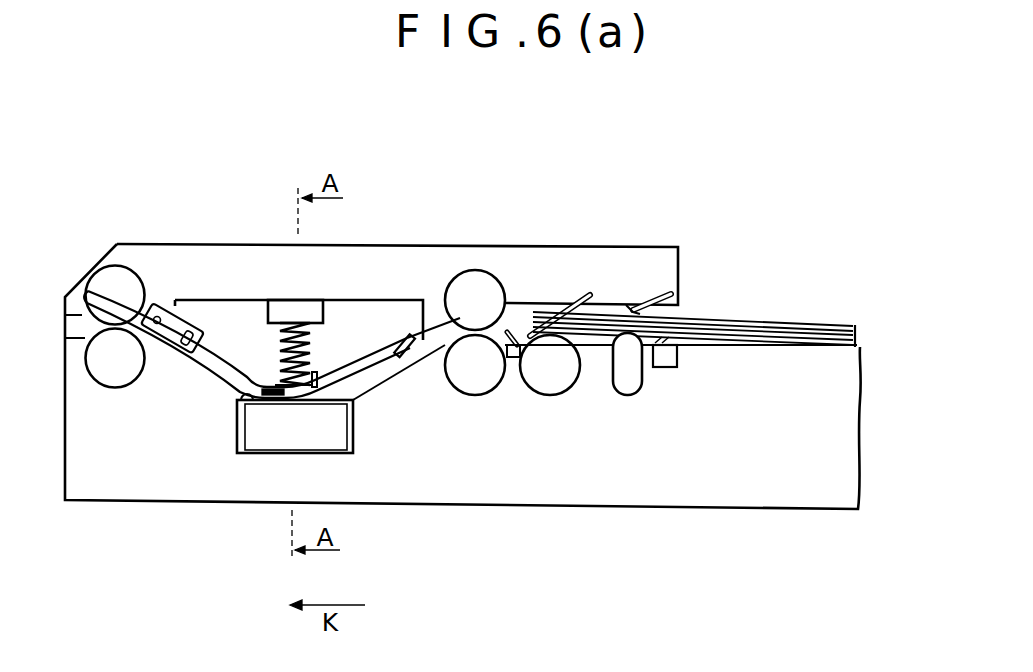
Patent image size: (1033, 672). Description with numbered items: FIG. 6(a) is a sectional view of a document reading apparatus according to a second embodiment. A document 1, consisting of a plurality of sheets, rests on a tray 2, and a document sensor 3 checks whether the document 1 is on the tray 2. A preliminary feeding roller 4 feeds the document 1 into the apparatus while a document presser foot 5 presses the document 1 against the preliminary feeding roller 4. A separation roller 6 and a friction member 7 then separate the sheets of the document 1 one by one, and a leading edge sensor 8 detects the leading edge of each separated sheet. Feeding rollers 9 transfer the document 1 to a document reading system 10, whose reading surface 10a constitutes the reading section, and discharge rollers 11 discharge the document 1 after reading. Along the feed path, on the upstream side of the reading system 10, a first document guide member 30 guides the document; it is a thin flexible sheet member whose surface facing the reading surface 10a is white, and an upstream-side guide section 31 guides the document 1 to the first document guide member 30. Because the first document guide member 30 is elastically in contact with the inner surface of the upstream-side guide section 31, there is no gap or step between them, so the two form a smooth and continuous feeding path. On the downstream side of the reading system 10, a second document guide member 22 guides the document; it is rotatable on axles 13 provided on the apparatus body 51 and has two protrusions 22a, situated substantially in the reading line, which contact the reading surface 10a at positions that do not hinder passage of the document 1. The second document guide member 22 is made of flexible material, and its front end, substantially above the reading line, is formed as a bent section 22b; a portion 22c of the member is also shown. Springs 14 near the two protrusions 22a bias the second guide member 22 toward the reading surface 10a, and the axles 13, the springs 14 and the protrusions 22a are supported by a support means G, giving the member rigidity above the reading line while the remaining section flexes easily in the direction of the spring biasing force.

The document 1 is at (793, 335).
The tray 2 is at (822, 348).
The document sensor 3 is at (667, 358).
The preliminary feeding roller 4 is at (641, 387).
The document presser foot 5 is at (665, 292).
The separation roller 6 is at (548, 395).
The friction member 7 is at (590, 294).
The leading edge sensor 8 is at (506, 308).
The feeding rollers 9 is at (444, 350).
The document reading system 10 is at (270, 447).
The reading surface 10a is at (235, 402).
The discharge rollers 11 is at (82, 330).
The axles 13 is at (162, 305).
The springs 14 is at (312, 318).
The second document guide member 22 is at (222, 368).
The protrusions 22a is at (287, 400).
The bent section 22b is at (324, 380).
The bracket 22c is at (190, 330).
The first document guide member 30 is at (400, 342).
The upstream-side guide section 31 is at (432, 342).
The apparatus body 51 is at (452, 166).
The support means G is at (236, 268).